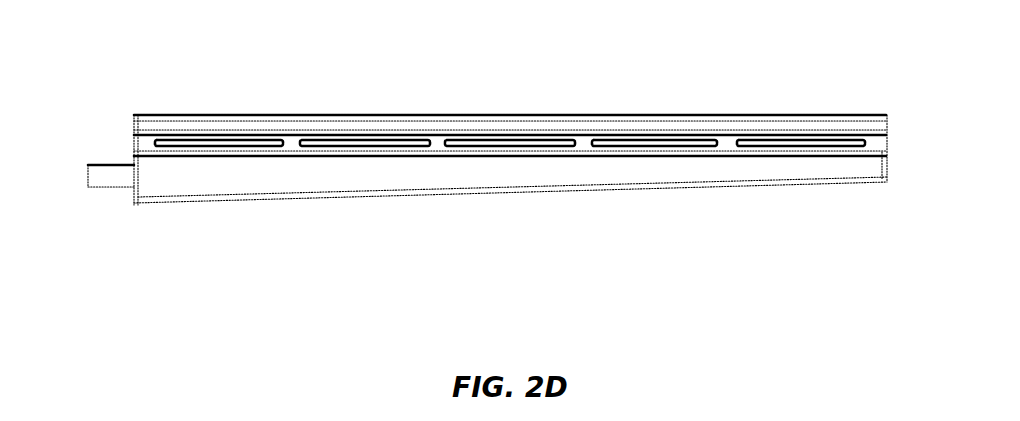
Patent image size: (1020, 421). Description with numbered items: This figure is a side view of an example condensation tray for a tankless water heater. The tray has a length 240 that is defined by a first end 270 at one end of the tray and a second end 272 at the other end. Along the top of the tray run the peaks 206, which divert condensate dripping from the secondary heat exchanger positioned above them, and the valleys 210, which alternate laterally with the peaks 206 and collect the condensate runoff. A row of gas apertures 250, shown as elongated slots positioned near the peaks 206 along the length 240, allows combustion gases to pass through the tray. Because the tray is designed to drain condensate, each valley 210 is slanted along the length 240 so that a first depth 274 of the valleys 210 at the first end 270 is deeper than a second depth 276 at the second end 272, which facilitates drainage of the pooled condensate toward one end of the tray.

The peaks 206 is at (595, 118).
The valleys 210 is at (678, 182).
The length 240 is at (893, 270).
The gas apertures 250 is at (777, 144).
The first end 270 is at (135, 114).
The second end 272 is at (888, 114).
The first depth 274 is at (90, 207).
The second depth 276 is at (890, 182).